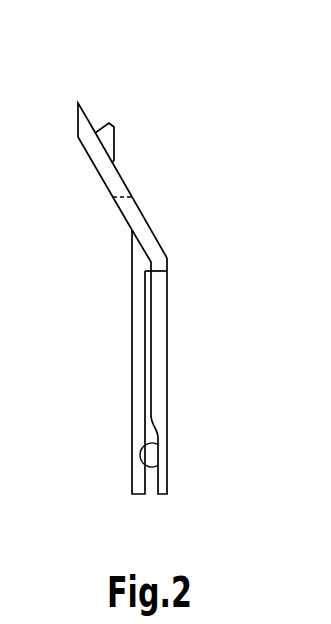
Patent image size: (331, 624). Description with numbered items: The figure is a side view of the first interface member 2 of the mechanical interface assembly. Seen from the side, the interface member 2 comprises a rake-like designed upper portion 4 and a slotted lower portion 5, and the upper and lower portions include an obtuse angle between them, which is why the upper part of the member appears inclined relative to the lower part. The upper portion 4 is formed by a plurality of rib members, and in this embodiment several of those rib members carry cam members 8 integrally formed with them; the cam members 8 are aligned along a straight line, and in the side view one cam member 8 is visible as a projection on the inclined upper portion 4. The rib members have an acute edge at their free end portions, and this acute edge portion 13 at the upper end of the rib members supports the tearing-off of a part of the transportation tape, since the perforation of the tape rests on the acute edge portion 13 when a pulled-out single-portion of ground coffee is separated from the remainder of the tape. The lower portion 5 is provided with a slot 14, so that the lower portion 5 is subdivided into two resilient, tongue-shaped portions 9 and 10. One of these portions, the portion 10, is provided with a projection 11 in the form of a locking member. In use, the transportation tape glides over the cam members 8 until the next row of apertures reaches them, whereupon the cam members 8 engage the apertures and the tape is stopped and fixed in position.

The first interface member 2 is at (104, 46).
The upper portion 4 is at (99, 153).
The lower portion 5 is at (134, 327).
The cam member 8 is at (110, 133).
The tongue-shaped portion 9 is at (140, 482).
The tongue-shaped portion 10 is at (167, 482).
The projection 11 is at (148, 453).
The acute edge portion 13 is at (67, 72).
The slot 14 is at (149, 516).